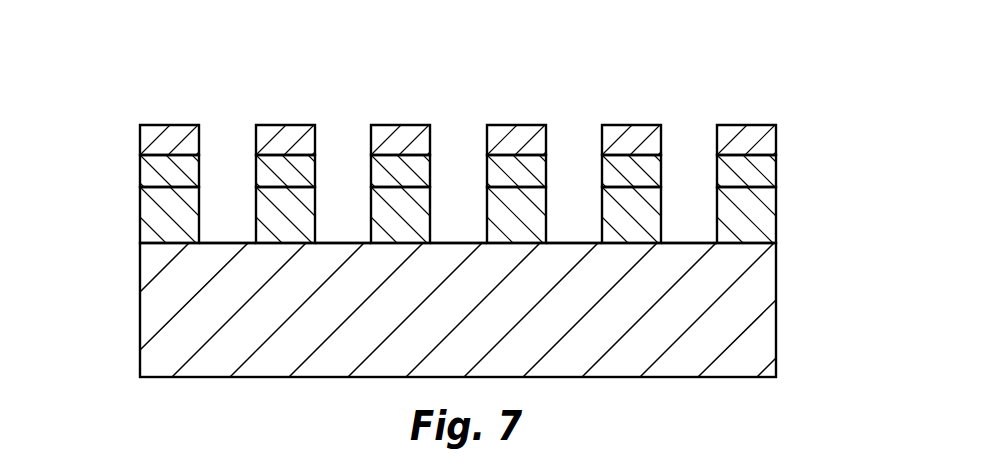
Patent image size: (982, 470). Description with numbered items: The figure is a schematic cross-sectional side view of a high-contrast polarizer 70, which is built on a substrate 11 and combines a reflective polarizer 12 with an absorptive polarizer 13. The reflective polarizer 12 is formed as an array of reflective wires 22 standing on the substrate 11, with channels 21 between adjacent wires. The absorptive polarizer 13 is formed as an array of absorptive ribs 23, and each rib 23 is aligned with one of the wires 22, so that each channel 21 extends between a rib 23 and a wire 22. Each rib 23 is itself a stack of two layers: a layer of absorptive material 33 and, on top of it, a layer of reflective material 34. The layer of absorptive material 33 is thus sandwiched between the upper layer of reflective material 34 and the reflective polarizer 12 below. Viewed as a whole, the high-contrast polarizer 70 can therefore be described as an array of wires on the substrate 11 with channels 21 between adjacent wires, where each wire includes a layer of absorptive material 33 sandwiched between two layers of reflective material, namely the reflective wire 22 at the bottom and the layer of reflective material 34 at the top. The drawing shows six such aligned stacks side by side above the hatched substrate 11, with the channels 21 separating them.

The high-contrast polarizer 70 is at (835, 282).
The substrate 11 is at (447, 317).
The reflective wire 22 is at (759, 223).
The layer of absorptive material 33 is at (108, 172).
The layer of reflective material 34 is at (108, 137).
The channel 21 is at (702, 194).
The absorptive rib 23 is at (287, 95).
The absorptive polarizer 13 is at (818, 154).
The reflective polarizer 12 is at (818, 212).